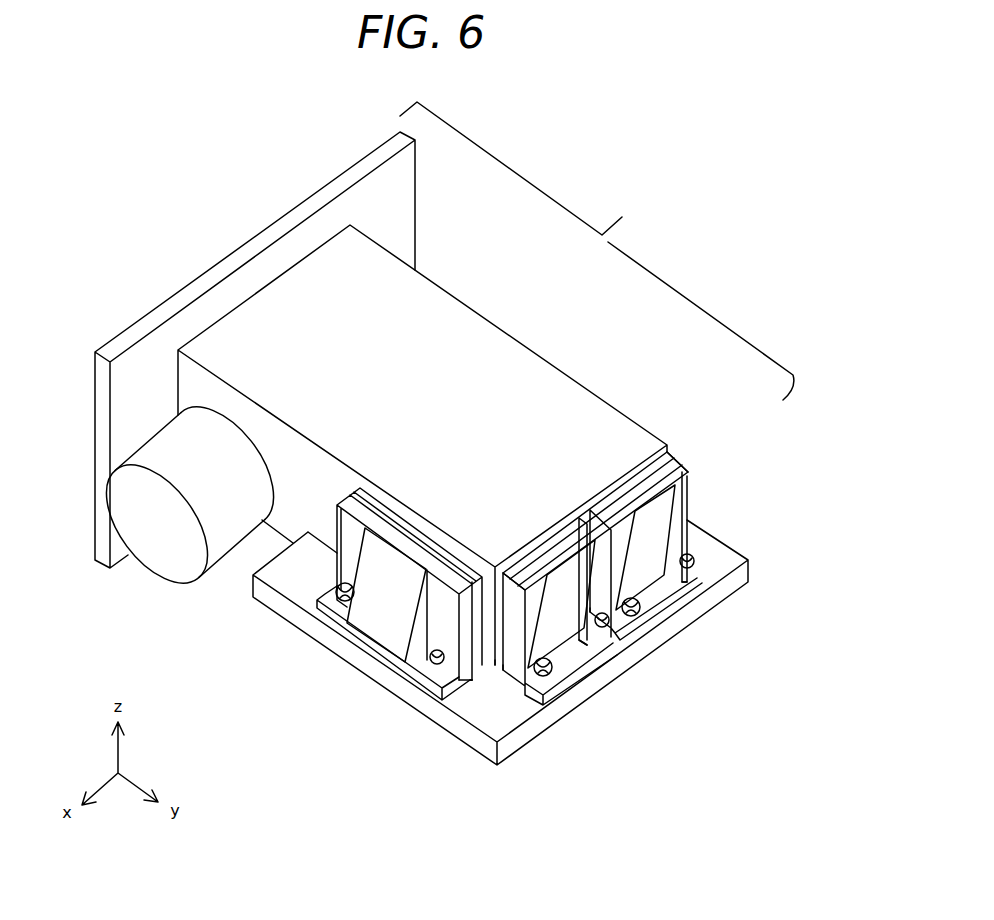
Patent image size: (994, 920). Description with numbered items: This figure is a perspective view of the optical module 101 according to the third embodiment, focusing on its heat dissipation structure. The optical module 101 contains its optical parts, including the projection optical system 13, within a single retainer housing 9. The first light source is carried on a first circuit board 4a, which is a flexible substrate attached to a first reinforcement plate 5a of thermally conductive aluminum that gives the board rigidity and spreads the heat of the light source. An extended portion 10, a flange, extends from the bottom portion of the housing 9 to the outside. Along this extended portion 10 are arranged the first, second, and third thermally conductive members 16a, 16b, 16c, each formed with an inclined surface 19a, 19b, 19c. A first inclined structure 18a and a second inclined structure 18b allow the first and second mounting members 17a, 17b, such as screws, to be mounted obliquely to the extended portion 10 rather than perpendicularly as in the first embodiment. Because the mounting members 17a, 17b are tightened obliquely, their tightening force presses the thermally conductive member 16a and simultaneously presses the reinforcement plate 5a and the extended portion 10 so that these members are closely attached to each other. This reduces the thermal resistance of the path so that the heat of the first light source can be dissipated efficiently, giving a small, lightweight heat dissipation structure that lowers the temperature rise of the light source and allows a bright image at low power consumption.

The optical module 101 is at (597, 251).
The projection optical system 13 is at (150, 548).
The retainer housing 9 is at (293, 513).
The extended portion 10 is at (490, 722).
The first thermally conductive member 16a is at (392, 660).
The second thermally conductive member 16b is at (583, 683).
The third thermally conductive member 16c is at (665, 612).
The inclined surface 19a is at (370, 618).
The inclined surface 19b is at (602, 680).
The inclined surface 19c is at (668, 585).
The first inclined structure 18a is at (338, 582).
The second inclined structure 18b is at (437, 650).
The first mounting member 17a is at (320, 622).
The second mounting member 17b is at (430, 683).
The first reinforcement plate 5a is at (473, 660).
The first circuit board 4a is at (496, 660).